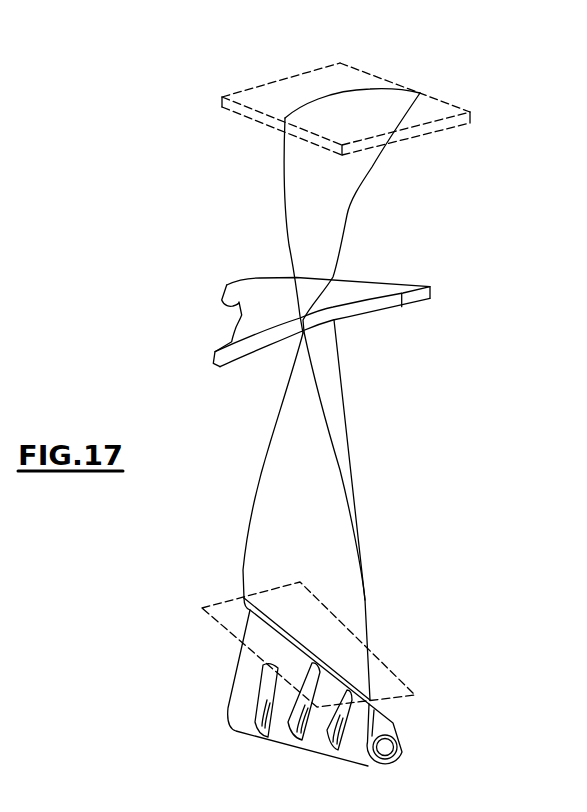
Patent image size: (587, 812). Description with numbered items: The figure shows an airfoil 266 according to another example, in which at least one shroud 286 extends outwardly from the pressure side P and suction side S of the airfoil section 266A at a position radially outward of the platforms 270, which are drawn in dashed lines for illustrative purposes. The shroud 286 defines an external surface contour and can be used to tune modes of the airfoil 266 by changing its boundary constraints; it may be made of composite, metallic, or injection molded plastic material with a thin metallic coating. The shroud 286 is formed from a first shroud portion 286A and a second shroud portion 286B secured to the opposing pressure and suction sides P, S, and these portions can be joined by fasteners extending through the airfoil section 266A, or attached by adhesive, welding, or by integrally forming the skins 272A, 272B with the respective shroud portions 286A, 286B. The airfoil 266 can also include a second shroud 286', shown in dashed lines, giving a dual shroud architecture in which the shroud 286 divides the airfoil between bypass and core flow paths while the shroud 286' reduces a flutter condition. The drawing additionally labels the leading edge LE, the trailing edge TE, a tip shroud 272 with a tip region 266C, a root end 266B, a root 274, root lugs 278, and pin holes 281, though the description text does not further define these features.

The airfoil 266 is at (306, 352).
The airfoil section 266A is at (353, 498).
The root end of blade 266B is at (380, 718).
The tip end of blade 266C is at (398, 107).
The platforms 270 is at (217, 605).
The tip shroud 272 is at (346, 119).
The skin 272A is at (318, 117).
The skin 272B is at (377, 82).
The root 274 is at (321, 701).
The root lug 278 is at (350, 685).
The pin hole 281 is at (336, 755).
The shroud 286 is at (299, 293).
The first shroud portion 286A is at (232, 333).
The second shroud portion 286B is at (387, 310).
The second shroud 286' is at (482, 93).
The leading edge LE is at (287, 232).
The trailing edge TE is at (372, 170).
The suction side S is at (347, 207).
The pressure side P is at (270, 443).